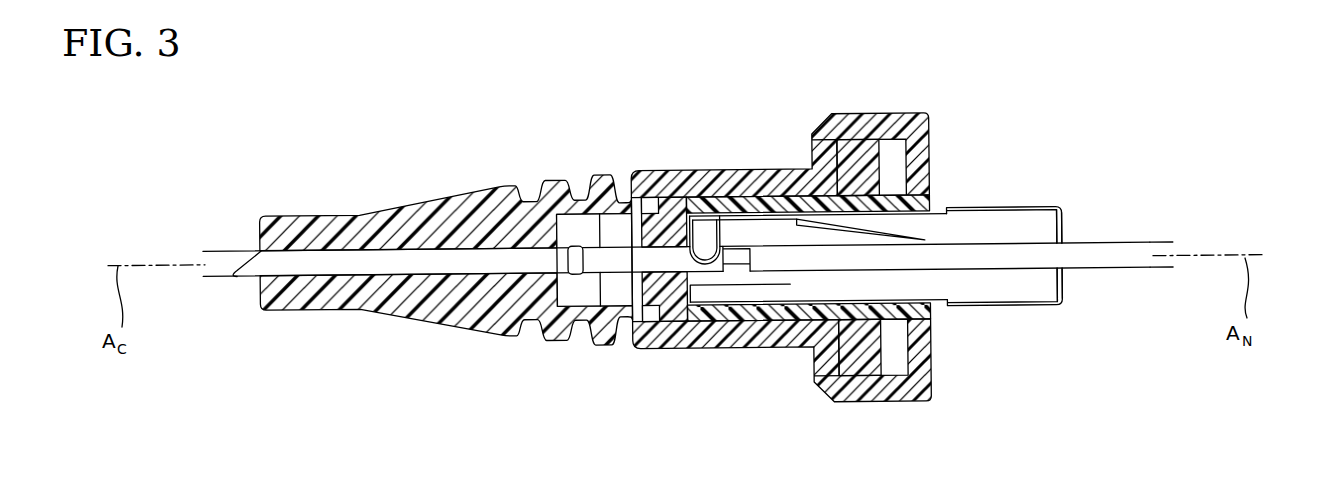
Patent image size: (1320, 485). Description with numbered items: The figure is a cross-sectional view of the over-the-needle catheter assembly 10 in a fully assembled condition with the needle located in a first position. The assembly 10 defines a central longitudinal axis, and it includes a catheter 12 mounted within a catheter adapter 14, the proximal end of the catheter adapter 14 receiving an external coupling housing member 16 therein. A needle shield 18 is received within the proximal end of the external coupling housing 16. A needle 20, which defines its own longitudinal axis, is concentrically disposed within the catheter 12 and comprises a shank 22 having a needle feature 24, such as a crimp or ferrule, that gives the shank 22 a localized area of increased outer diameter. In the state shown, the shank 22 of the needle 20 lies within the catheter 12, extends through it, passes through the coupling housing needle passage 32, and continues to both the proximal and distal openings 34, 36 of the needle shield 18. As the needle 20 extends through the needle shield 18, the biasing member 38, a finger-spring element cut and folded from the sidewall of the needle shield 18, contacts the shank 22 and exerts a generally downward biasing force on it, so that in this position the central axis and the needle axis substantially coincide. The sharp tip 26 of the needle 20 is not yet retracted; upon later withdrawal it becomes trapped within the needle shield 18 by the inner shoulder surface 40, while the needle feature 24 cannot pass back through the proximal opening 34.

The over-the-needle catheter assembly 10 is at (1135, 124).
The catheter 12 is at (223, 250).
The catheter adapter 14 is at (408, 203).
The external coupling housing member 16 is at (783, 200).
The needle shield 18 is at (1023, 207).
The needle 20 is at (1153, 243).
The shank 22 is at (618, 265).
The needle feature 24 is at (577, 275).
The sharp tip 26 is at (229, 278).
The coupling housing needle passage 32 is at (657, 250).
The proximal opening 34 is at (1061, 243).
The distal opening 36 is at (722, 245).
The biasing member 38 is at (925, 235).
The inner shoulder surface 40 is at (702, 288).